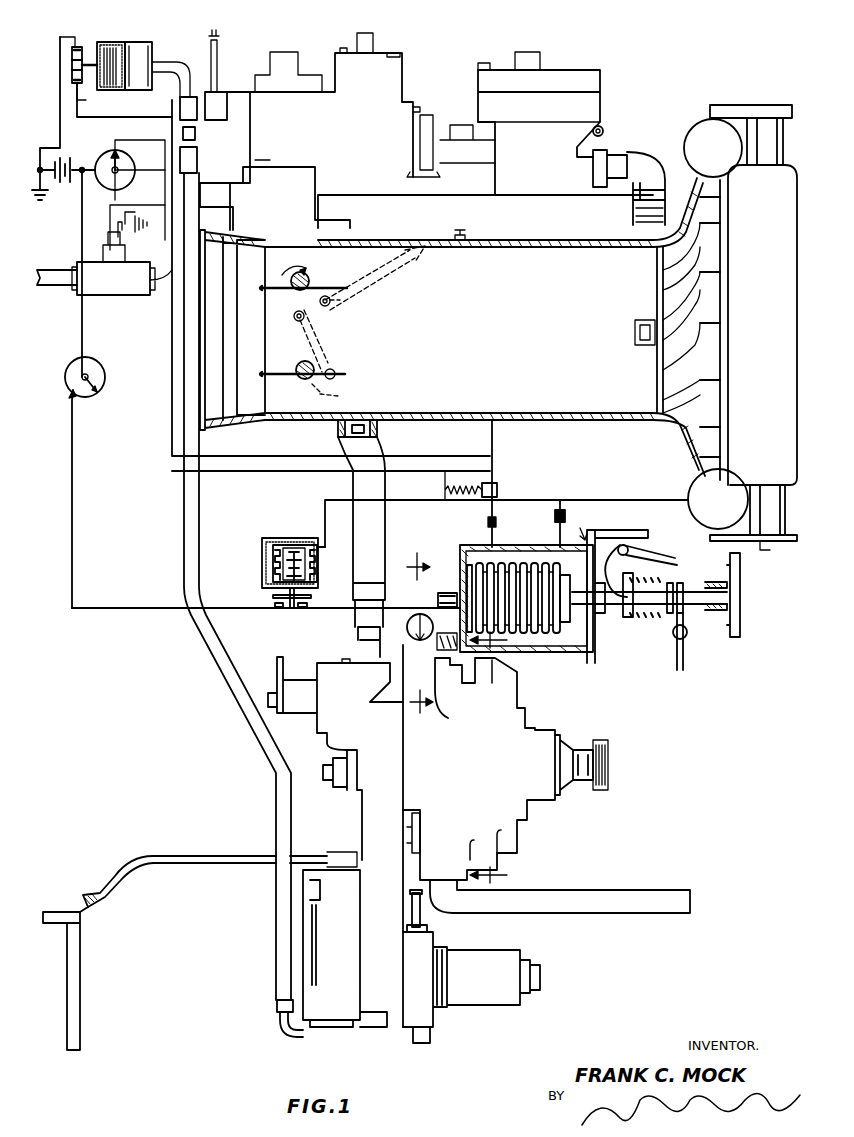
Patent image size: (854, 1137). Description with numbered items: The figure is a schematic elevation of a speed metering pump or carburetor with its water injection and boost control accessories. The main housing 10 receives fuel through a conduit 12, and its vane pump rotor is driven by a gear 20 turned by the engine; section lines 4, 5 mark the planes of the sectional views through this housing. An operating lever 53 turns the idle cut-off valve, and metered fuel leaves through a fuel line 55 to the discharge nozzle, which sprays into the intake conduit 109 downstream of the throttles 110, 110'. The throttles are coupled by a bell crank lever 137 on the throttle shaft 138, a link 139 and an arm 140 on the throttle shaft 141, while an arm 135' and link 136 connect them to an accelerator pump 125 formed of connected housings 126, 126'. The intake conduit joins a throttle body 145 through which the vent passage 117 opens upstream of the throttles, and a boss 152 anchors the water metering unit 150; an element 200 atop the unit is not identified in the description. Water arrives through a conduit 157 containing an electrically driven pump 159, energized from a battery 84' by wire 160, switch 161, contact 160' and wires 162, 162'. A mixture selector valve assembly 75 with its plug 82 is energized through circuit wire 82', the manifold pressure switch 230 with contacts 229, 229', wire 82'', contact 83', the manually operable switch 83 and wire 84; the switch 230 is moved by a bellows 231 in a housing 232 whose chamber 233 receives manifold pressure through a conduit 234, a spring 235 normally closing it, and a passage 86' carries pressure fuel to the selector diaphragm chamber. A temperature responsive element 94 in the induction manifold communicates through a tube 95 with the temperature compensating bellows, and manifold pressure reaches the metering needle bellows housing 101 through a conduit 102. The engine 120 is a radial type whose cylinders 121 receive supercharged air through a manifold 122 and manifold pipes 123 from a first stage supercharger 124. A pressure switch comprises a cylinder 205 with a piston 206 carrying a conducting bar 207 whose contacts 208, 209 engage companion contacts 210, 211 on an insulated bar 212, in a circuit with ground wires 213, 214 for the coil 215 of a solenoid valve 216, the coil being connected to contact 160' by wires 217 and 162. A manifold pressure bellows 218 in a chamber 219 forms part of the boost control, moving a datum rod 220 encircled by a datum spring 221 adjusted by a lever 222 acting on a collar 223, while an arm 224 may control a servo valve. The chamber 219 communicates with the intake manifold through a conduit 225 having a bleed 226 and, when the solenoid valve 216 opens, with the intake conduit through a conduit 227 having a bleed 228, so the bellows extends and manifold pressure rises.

The section line 4 is at (491, 758).
The section line 5 is at (423, 635).
The main housing 10 is at (507, 715).
The conduit 12 is at (647, 882).
The gear 20 is at (606, 790).
The operating lever 53 is at (276, 660).
The fuel line 55 is at (640, 226).
The mixture selector unit 75 is at (442, 620).
The plug 82 is at (423, 609).
The circuit wire 82' is at (388, 626).
The wire 82'' is at (208, 571).
The manually operable switch 83 is at (96, 393).
The contact 83' is at (56, 499).
The wire 84 is at (104, 273).
The battery 84' is at (63, 199).
The passage 86' is at (311, 941).
The temperature responsive element 94 is at (82, 978).
The tube 95 is at (210, 865).
The housing 101 is at (490, 1005).
The conduit 102 is at (420, 910).
The intake conduit 109 is at (459, 333).
The throttle 110 is at (328, 365).
The throttle 110' is at (333, 297).
The passage 117 is at (276, 245).
The engine 120 is at (770, 327).
The cylinders 121 is at (770, 145).
The manifold 122 is at (688, 140).
The manifold pipes 123 is at (730, 105).
The first stage supercharger 124 is at (655, 368).
The accelerator pump 125 is at (606, 120).
The housing 126 is at (520, 123).
The housing 126' is at (539, 145).
The arm 135' is at (625, 125).
The link 136 is at (603, 145).
The bell crank lever 137 is at (330, 316).
The throttle shaft 138 is at (312, 278).
The link 139 is at (328, 345).
The arm 140 is at (336, 395).
The throttle shaft 141 is at (302, 380).
The throttle body 145 is at (328, 432).
The water metering unit 150 is at (355, 137).
The boss 152 is at (440, 230).
The conduit 157 is at (52, 265).
The pump 159 is at (122, 296).
The wire 160 is at (103, 165).
The contact 160' is at (126, 178).
The switch 161 is at (137, 158).
The wire 162 is at (153, 183).
The wire 162' is at (124, 219).
The probe 200 is at (219, 56).
The cylinder 205 is at (140, 45).
The piston 206 is at (135, 80).
The bar of conducting material 207 is at (110, 42).
The contact 208 is at (78, 50).
The contact 209 is at (80, 90).
The companion contact 210 is at (70, 62).
The companion contact 211 is at (72, 85).
The insulated bar 212 is at (72, 72).
The ground wire 213 is at (49, 103).
The ground wire 214 is at (178, 115).
The coil 215 is at (460, 502).
The solenoid valve 216 is at (500, 488).
The wire 217 is at (305, 475).
The manifold pressure bellows 218 is at (518, 560).
The chamber 219 is at (563, 650).
The datum rod 220 is at (615, 610).
The datum spring 221 is at (653, 612).
The lever 222 is at (650, 553).
The slidable bushing 223 is at (635, 580).
The arm 224 is at (673, 660).
The conduit 225 is at (615, 500).
The bleed 226 is at (572, 500).
The conduit 227 is at (494, 452).
The bleed 228 is at (497, 522).
The contact 229 is at (315, 599).
The contact 229' is at (261, 599).
The manifold pressure switch 230 is at (290, 612).
The bellows 231 is at (273, 575).
The housing 232 is at (262, 552).
The bellows chamber 233 is at (280, 548).
The conduit 234 is at (328, 552).
The spring 235 is at (295, 548).